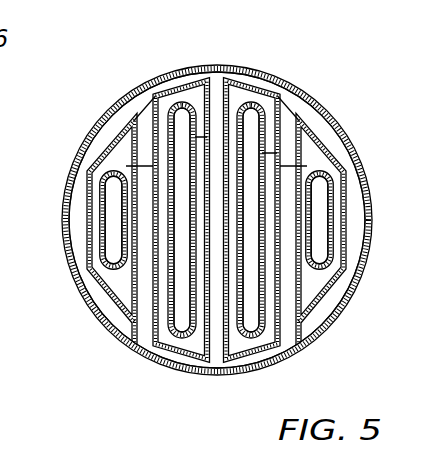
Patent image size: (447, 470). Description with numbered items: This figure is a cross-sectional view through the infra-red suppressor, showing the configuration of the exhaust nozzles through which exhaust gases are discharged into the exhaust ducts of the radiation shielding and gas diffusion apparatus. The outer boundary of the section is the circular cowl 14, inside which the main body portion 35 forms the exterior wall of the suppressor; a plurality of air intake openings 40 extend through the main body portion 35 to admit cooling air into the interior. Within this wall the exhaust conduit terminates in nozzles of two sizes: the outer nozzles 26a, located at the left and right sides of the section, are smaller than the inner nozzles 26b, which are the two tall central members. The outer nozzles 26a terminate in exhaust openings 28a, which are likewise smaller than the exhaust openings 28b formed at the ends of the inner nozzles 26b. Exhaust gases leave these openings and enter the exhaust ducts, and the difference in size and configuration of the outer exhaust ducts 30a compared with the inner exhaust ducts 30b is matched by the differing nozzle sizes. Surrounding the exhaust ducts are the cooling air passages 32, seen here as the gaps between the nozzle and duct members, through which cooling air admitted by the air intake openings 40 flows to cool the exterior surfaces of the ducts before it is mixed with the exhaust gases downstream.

The cowl 14 is at (209, 228).
The outer nozzles 26a is at (310, 286).
The inner nozzles 26b is at (200, 313).
The exhaust openings 28a is at (316, 168).
The exhaust openings 28b is at (185, 88).
The outer exhaust ducts 30a is at (120, 148).
The inner exhaust ducts 30b is at (186, 352).
The cooling air passages 32 is at (150, 110).
The main body portion 35 is at (62, 230).
The air intake openings 40 is at (285, 79).